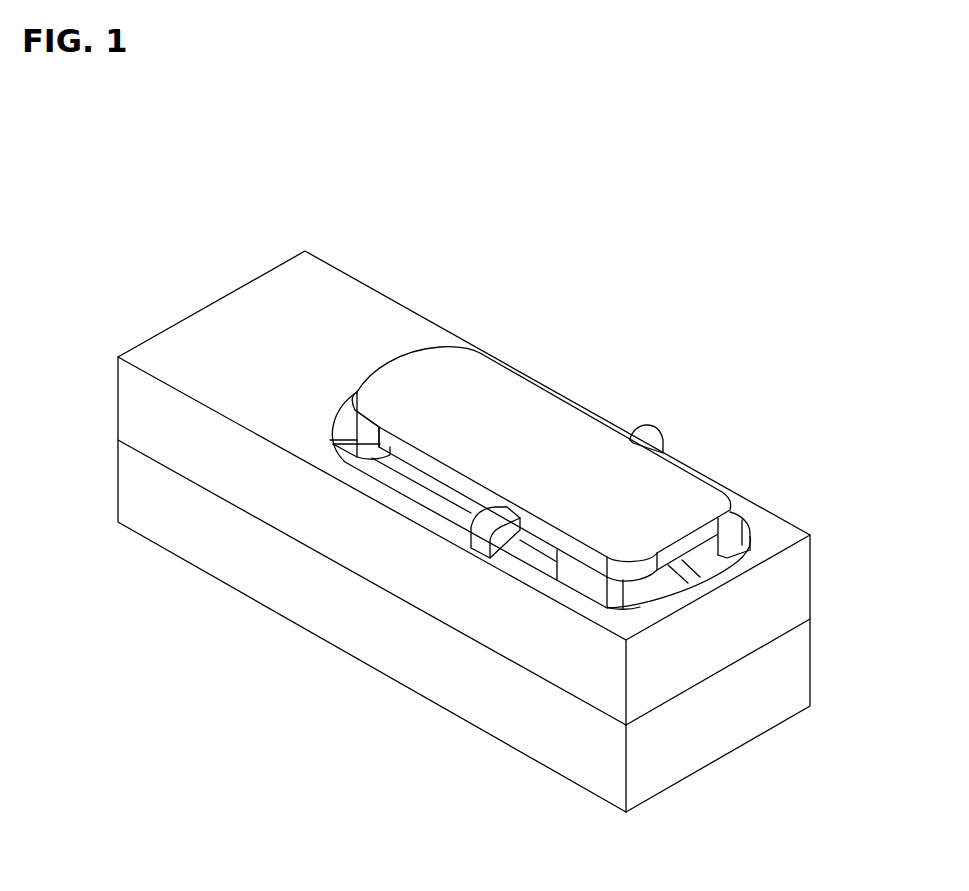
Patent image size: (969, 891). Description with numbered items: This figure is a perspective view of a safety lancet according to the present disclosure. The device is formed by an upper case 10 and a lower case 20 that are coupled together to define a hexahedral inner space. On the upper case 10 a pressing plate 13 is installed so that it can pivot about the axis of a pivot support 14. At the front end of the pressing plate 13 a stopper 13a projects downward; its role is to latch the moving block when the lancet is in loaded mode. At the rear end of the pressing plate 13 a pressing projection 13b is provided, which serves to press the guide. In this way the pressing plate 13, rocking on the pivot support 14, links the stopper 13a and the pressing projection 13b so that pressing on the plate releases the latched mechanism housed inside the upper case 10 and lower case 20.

The upper case 10 is at (802, 582).
The lower case 20 is at (802, 672).
The pressing plate 13 is at (562, 420).
The stopper 13a is at (333, 444).
The pressing projection 13b is at (579, 568).
The pivot support 14 is at (650, 425).